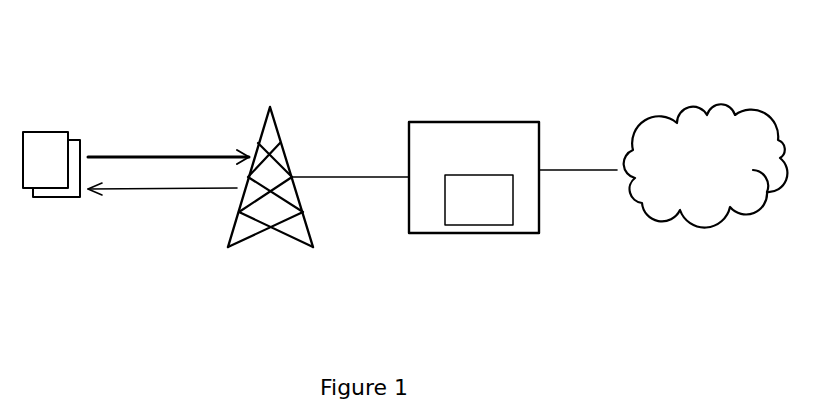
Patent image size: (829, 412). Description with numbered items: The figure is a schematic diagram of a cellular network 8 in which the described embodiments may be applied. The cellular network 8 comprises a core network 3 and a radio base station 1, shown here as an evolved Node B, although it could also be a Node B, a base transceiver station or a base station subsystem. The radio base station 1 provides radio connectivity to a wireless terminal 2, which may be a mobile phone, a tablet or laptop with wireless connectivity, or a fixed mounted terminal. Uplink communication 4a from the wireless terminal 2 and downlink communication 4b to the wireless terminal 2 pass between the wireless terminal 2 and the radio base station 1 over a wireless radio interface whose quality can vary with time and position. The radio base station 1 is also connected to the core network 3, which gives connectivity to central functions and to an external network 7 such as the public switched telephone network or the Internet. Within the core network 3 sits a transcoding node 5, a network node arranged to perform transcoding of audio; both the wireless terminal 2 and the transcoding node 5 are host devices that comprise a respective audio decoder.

The radio base station 1 is at (277, 122).
The wireless terminal 2 is at (47, 125).
The core network 3 is at (483, 122).
The uplink communication 4a is at (152, 157).
The downlink communication 4b is at (162, 197).
The transcoding node 5 is at (479, 200).
The external network 7 is at (706, 165).
The cellular network 8 is at (599, 62).